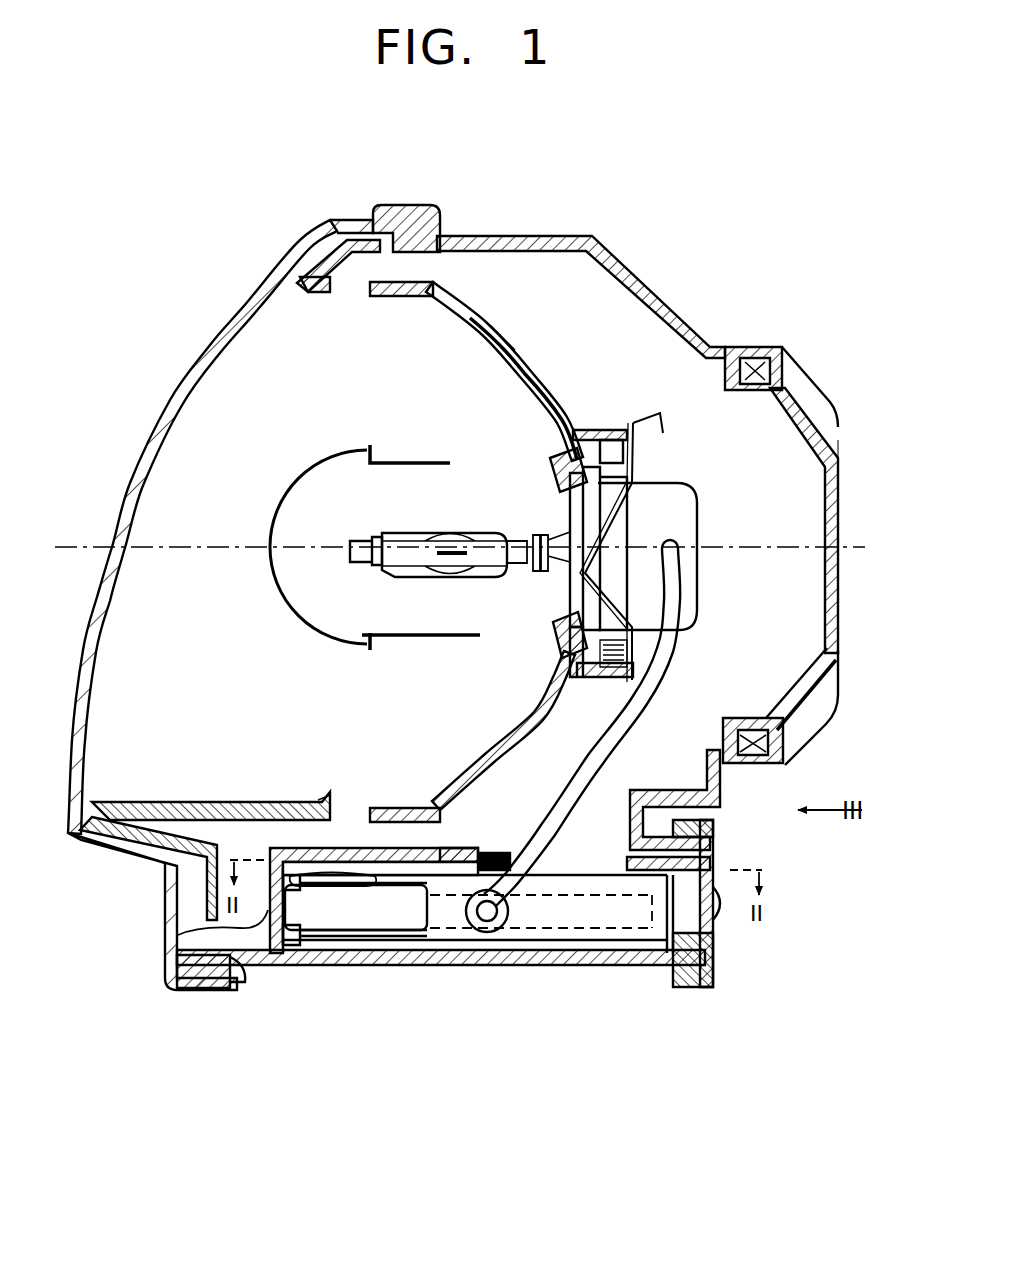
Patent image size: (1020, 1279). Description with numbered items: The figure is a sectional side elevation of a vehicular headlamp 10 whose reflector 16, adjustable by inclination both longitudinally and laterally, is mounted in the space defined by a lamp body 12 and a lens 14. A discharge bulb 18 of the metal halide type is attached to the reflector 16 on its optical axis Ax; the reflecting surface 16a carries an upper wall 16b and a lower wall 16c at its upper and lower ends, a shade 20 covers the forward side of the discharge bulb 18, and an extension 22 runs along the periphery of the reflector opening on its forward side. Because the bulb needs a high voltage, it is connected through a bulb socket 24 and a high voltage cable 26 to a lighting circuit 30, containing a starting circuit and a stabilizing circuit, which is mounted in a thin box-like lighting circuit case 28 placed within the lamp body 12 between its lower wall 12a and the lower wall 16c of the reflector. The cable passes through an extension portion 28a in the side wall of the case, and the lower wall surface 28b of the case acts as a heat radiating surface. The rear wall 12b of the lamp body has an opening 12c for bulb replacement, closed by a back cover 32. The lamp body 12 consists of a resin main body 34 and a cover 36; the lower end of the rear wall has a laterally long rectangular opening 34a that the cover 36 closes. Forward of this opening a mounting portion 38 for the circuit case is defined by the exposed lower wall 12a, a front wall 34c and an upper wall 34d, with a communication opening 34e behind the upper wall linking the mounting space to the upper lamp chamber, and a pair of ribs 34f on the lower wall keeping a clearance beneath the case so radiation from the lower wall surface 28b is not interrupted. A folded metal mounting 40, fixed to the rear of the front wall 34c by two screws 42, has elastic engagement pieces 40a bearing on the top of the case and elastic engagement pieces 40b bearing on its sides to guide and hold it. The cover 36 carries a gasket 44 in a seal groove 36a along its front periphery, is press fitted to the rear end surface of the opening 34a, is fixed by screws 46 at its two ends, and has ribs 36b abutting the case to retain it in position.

The headlamp 10 is at (624, 215).
The lamp body 12 is at (682, 293).
The lower wall 12a is at (432, 966).
The rear wall 12b is at (722, 790).
The opening 12c is at (745, 392).
The lens 14 is at (198, 345).
The reflector 16 is at (483, 552).
The reflecting surface 16a is at (490, 338).
The upper wall 16b is at (392, 298).
The lower wall 16c is at (412, 806).
The discharge bulb 18 is at (498, 524).
The shade 20 is at (308, 458).
The extension 22 is at (306, 292).
The bulb socket 24 is at (686, 510).
The high voltage cable 26 is at (636, 740).
The lighting circuit case 28 is at (475, 948).
The extension portion 28a is at (484, 935).
The lower wall surface 28b is at (392, 945).
The lighting circuit 30 is at (540, 935).
The back cover 32 is at (852, 500).
The main body 34 is at (496, 898).
The opening 34a is at (716, 935).
The front wall 34c is at (238, 975).
The upper wall 34d is at (462, 845).
The communication opening 34e is at (512, 866).
The ribs 34f is at (332, 950).
The cover 36 is at (684, 937).
The seal groove 36a is at (690, 988).
The ribs 36b is at (690, 905).
The mounting portion 38 is at (360, 834).
The metal mounting 40 is at (345, 880).
The elastic engagement pieces 40a is at (330, 866).
The elastic engagement pieces 40b is at (270, 937).
The screws 42 is at (178, 922).
The gasket 44 is at (702, 840).
The screws 46 is at (722, 910).
The optical axis Ax is at (97, 546).